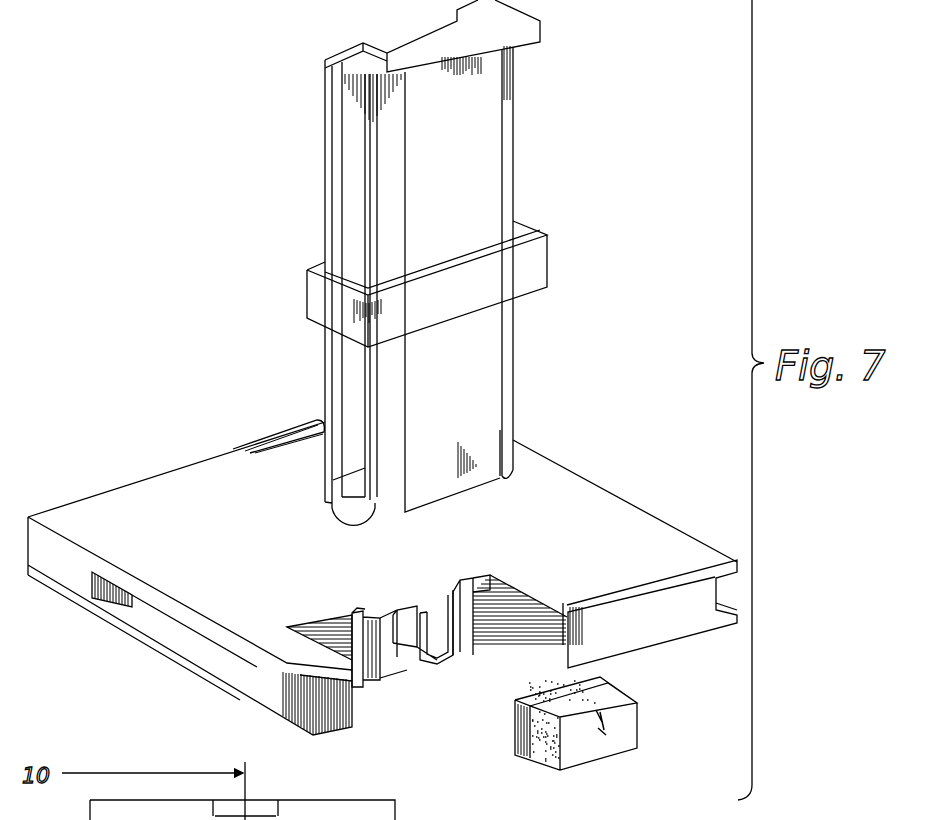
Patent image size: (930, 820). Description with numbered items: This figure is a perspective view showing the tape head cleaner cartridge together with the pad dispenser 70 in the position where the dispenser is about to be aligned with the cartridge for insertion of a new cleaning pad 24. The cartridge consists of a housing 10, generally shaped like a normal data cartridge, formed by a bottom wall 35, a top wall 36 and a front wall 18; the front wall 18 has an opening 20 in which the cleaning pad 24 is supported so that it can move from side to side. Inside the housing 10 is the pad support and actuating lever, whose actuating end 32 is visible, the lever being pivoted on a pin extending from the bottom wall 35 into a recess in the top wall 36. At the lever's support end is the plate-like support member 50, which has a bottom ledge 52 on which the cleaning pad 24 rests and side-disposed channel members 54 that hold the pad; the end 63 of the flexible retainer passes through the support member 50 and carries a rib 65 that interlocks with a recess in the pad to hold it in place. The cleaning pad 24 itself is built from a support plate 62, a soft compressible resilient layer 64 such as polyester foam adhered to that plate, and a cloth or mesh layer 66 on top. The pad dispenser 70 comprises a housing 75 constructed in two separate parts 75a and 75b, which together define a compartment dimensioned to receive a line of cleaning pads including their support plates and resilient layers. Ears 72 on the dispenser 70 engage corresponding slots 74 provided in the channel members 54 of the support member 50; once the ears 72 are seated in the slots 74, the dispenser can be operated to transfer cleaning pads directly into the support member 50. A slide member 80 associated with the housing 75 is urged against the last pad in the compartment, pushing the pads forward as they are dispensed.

The housing 10 is at (201, 494).
The front wall 18 is at (648, 632).
The opening 20 is at (474, 686).
The cleaning pad 24 is at (604, 752).
The actuating end 32 is at (297, 430).
The bottom wall 35 is at (182, 664).
The top wall 36 is at (265, 558).
The support member 50 is at (446, 674).
The bottom ledge 52 is at (405, 667).
The channel members 54 is at (376, 672).
The support plate 62 is at (530, 753).
The other end of retainer 63 is at (391, 632).
The resilient layer 64 is at (544, 757).
The rib 65 is at (413, 612).
The mesh layer 66 is at (640, 735).
The pad dispenser 70 is at (306, 198).
The ears 72 is at (512, 473).
The slots 74 is at (477, 575).
The dispenser housing 75 is at (464, 178).
The first housing part 75a is at (325, 113).
The second housing part 75b is at (478, 113).
The slide member 80 is at (543, 258).